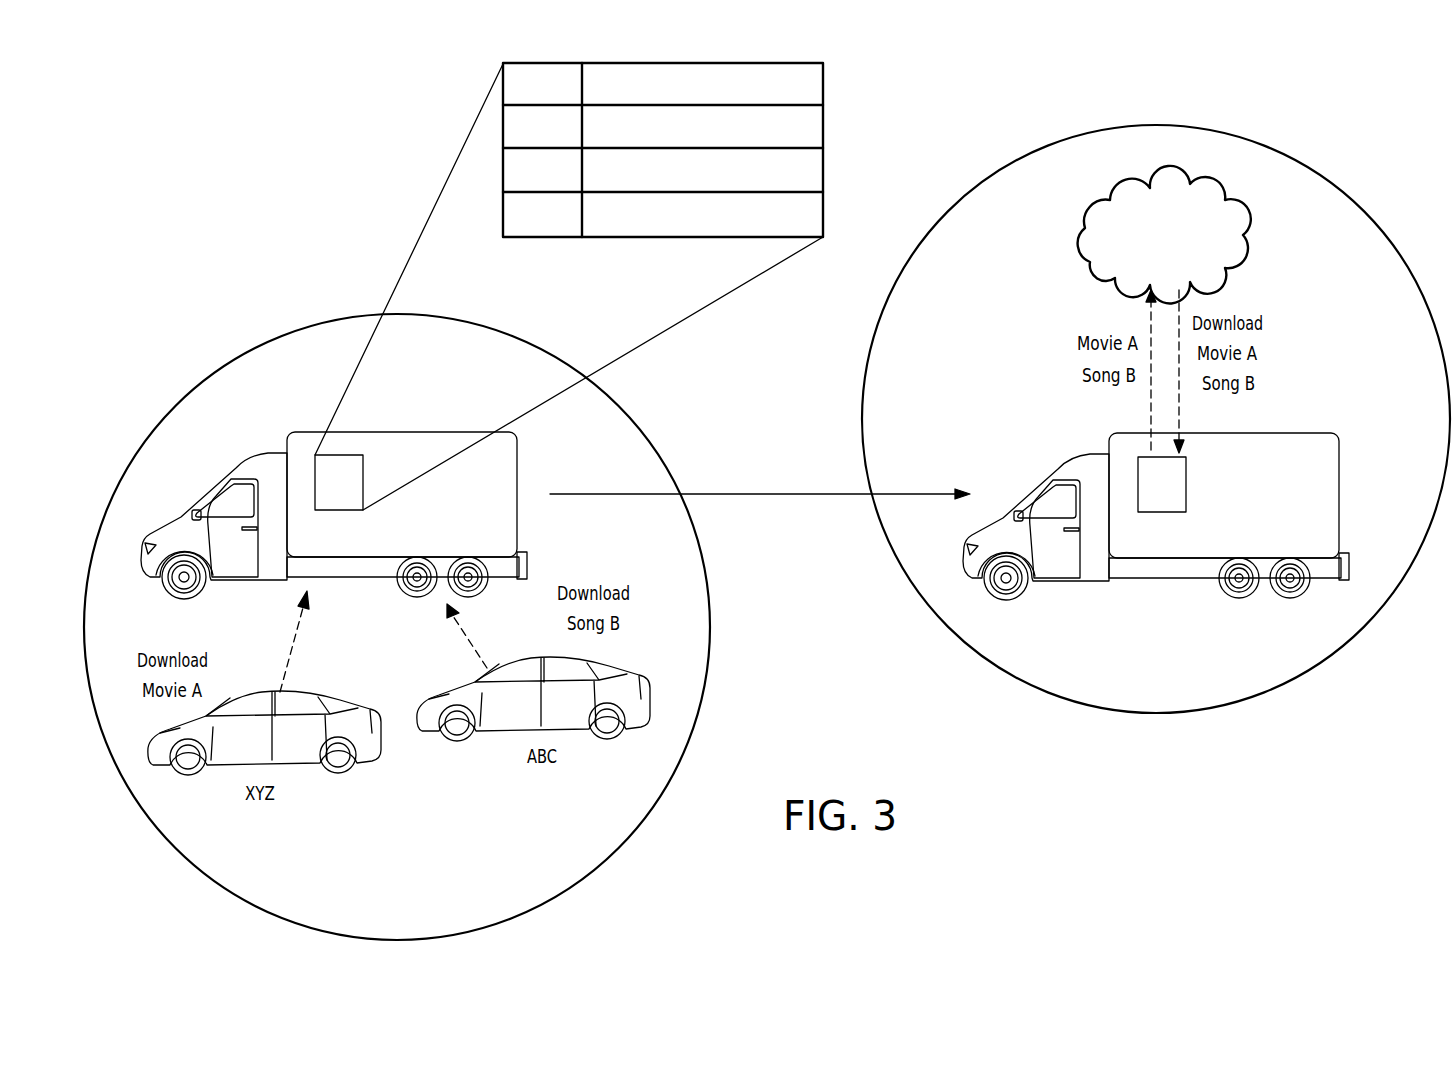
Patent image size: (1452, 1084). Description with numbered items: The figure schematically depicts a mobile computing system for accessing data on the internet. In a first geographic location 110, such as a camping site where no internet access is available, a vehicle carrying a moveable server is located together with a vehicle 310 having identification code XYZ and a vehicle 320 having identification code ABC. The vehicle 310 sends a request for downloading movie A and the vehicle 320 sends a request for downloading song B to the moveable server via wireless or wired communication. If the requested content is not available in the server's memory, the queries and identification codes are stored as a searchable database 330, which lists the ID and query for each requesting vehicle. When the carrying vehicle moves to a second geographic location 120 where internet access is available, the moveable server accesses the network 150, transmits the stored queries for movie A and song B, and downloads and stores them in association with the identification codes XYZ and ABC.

The first geographic location 110 is at (656, 453).
The second geographic location 120 is at (1374, 225).
The network 150 is at (1244, 232).
The vehicle 310 is at (298, 763).
The vehicle 320 is at (495, 733).
The searchable database 330 is at (823, 150).